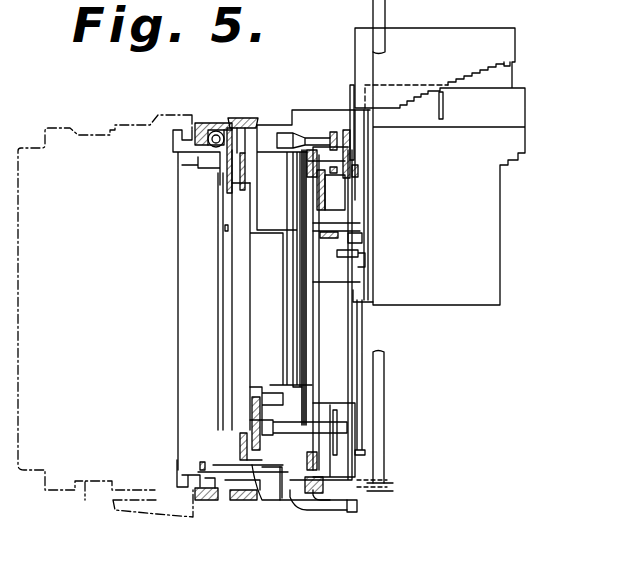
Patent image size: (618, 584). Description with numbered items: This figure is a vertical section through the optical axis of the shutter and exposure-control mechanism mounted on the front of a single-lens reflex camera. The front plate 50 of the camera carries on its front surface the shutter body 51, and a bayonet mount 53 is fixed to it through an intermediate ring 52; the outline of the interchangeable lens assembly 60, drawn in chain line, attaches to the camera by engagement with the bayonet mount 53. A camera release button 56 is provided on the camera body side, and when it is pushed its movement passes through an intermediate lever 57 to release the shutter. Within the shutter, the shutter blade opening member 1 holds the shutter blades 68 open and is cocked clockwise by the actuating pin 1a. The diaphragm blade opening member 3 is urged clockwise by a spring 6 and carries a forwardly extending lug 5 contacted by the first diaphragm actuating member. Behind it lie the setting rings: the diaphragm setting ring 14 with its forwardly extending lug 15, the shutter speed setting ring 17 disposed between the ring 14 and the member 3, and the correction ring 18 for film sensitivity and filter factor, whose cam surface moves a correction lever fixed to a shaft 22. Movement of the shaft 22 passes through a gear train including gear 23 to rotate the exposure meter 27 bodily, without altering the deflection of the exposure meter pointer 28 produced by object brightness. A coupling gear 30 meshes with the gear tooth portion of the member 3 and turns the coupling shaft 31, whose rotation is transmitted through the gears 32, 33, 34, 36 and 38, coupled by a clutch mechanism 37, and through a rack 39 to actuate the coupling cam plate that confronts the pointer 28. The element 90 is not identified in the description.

The shutter blade opening member 1 is at (312, 495).
The actuating pin 1a is at (332, 500).
The diaphragm blade opening member 3 is at (228, 138).
The forwardly extending lug 5 is at (217, 457).
The spring 6 is at (214, 128).
The diaphragm setting ring 14 is at (207, 502).
The forwardly extending lug 15 is at (200, 462).
The shutter speed setting ring 17 is at (243, 497).
The correction ring 18 is at (252, 468).
The shaft 22 is at (368, 248).
The gear train gear 23 is at (365, 238).
The exposure meter 27 is at (490, 78).
The exposure meter pointer 28 is at (447, 103).
The coupling gear 30 is at (225, 229).
The coupling shaft 31 is at (360, 226).
The gear train gear 32 is at (333, 243).
The gear train gear 33 is at (342, 193).
The gear train gear 34 is at (343, 178).
The gear train gear 36 is at (320, 133).
The clutch mechanism 37 is at (344, 137).
The gear train gear 38 is at (358, 143).
The rack 39 is at (343, 88).
The front plate 50 is at (349, 505).
The shutter body 51 is at (277, 395).
The intermediate ring 52 is at (281, 499).
The bayonet mount 53 is at (182, 468).
The camera release button 56 is at (385, 8).
The intermediate lever 57 is at (393, 498).
The interchangeable lens assembly 60 is at (105, 323).
The shutter blades 68 is at (307, 333).
The step 90 is at (512, 68).